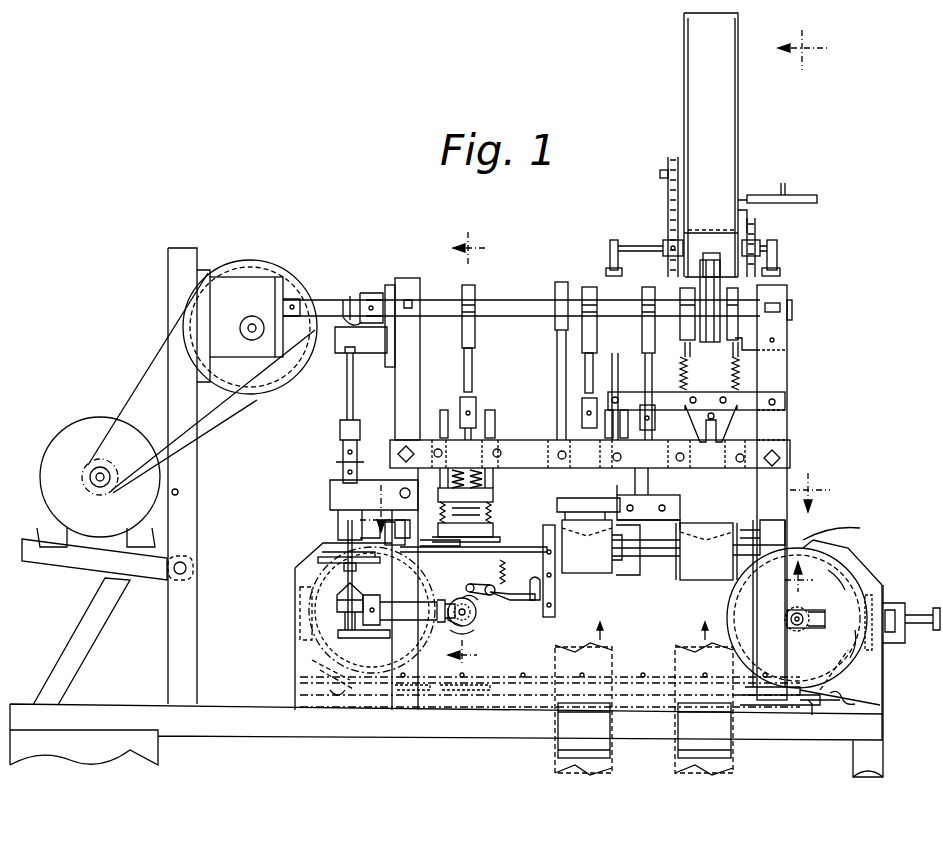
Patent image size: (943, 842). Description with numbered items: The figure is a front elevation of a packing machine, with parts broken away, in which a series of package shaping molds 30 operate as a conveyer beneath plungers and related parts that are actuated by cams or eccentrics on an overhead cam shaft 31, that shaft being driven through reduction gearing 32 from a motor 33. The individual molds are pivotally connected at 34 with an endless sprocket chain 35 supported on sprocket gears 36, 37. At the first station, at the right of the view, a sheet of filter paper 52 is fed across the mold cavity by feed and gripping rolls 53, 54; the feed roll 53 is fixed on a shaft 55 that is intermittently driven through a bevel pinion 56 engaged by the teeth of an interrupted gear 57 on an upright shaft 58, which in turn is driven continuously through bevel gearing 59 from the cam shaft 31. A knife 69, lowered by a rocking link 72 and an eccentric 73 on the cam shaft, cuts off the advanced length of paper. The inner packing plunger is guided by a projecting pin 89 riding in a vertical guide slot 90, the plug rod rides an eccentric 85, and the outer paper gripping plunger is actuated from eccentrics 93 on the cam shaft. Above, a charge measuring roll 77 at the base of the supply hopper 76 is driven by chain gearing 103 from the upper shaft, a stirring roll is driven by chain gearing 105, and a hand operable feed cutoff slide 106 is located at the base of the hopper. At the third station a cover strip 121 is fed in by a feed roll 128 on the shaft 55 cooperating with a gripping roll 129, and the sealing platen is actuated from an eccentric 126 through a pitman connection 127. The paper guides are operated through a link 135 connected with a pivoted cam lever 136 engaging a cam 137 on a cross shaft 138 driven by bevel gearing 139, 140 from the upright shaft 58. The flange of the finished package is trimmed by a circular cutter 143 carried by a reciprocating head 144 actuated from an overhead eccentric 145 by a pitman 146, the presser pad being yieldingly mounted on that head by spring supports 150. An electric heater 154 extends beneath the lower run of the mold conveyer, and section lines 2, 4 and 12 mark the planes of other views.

The section line 2- 2 is at (804, 312).
The section line 4- 4 is at (605, 502).
The section line 12- 12 is at (477, 438).
The package shaping molds 30 is at (812, 542).
The overhead cam shaft 31 is at (506, 298).
The reduction gearing 32 is at (268, 256).
The motor 33 is at (68, 420).
The pivotal connection 34 is at (855, 625).
The endless sprocket chain 35 is at (525, 666).
The sprocket gear 36 is at (300, 655).
The sprocket gear 37 is at (880, 660).
The filter paper 52 is at (733, 765).
The feed roll 53 is at (706, 578).
The gripping roll 54 is at (702, 538).
The shaft 55 is at (640, 552).
The bevel pinion 56 is at (366, 575).
The interrupted gear 57 is at (320, 557).
The upright shaft 58 is at (338, 520).
The bevel gearing 59 is at (352, 295).
The knife 69 is at (696, 513).
The rocking link 72 is at (648, 378).
The eccentric 73 is at (660, 290).
The supply hopper 76 is at (740, 103).
The charge measuring roll 77 is at (694, 268).
The eccentric 85 is at (762, 290).
The projecting pin 89 is at (727, 402).
The vertical guide slot 90 is at (712, 420).
The eccentrics 93 is at (803, 365).
The chain gearing 103 is at (757, 228).
The chain gearing 105 is at (668, 207).
The feed cutoff slide 106 is at (788, 195).
The cover strip 121 is at (605, 650).
The eccentric 126 is at (585, 290).
The pitman connection 127 is at (582, 384).
The feed roll 128 is at (628, 578).
The gripping roll 129 is at (588, 535).
The link 135 is at (557, 590).
The cam lever 136 is at (515, 602).
The cam 137 is at (476, 620).
The cross shaft 138 is at (456, 640).
The bevel gearing 139 is at (455, 598).
The bevel gearing 140 is at (338, 600).
The circular cutter 143 is at (470, 512).
The reciprocating head 144 is at (494, 496).
The eccentric 145 is at (464, 290).
The pitman 146 is at (466, 370).
The spring supports 150 is at (494, 528).
The electric heater 154 is at (808, 715).